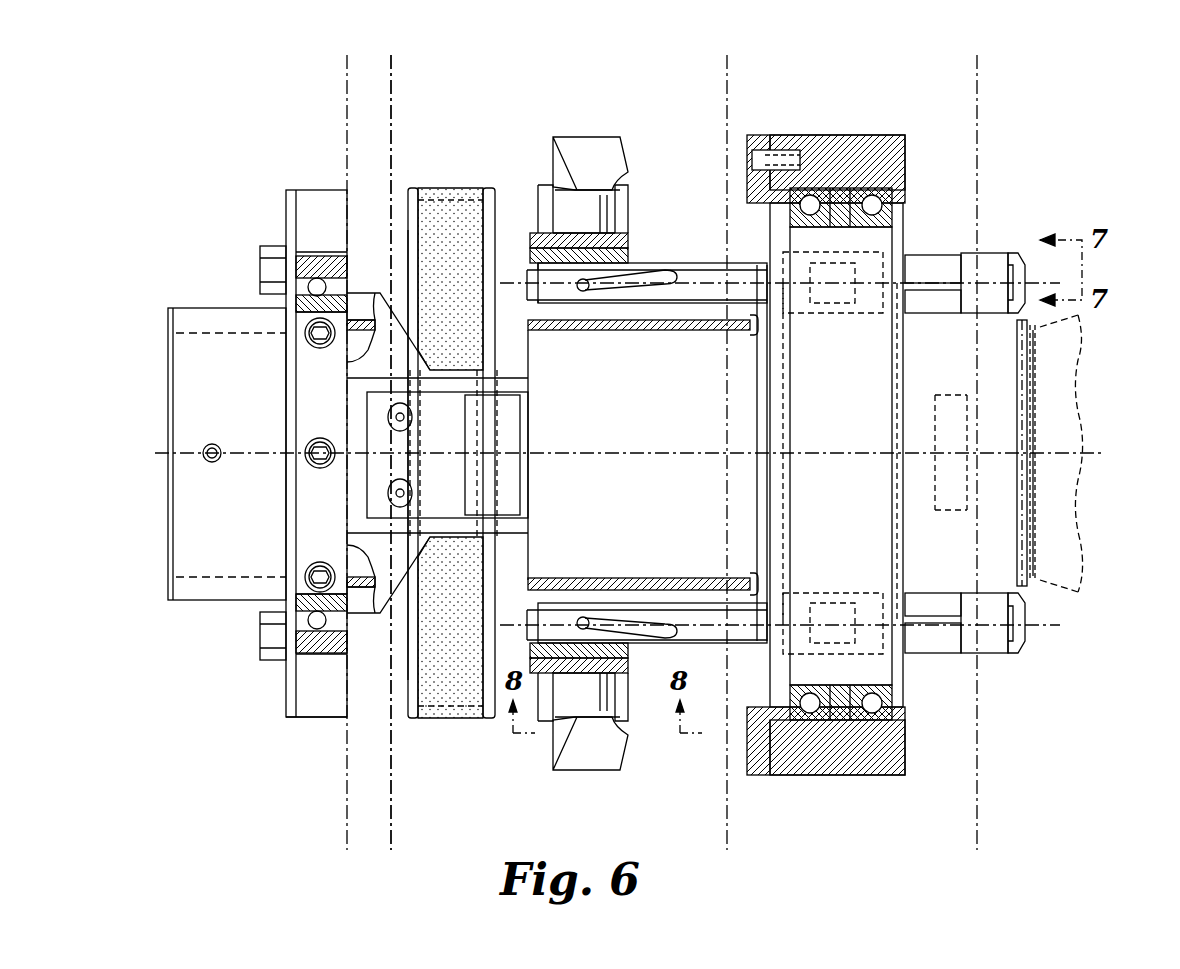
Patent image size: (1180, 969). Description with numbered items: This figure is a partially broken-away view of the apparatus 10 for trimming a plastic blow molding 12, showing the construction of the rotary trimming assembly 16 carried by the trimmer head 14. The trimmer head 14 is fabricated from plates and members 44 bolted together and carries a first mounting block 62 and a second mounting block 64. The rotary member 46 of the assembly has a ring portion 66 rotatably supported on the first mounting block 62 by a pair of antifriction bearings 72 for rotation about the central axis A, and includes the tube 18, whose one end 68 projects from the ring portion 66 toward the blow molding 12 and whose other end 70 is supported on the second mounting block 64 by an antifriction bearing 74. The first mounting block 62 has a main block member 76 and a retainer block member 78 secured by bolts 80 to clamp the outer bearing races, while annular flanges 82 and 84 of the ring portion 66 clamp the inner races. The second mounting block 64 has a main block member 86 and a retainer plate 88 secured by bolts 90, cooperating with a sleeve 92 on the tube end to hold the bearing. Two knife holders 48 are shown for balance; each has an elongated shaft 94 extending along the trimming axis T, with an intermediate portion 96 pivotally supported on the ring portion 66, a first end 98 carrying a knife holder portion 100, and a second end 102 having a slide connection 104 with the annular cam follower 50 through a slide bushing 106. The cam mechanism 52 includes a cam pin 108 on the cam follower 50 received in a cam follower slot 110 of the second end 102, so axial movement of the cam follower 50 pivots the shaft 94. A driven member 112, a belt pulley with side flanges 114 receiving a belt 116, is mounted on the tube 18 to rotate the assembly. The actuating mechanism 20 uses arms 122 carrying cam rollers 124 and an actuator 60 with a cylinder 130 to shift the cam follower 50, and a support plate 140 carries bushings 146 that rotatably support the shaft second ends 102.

The apparatus 10 is at (1058, 773).
The plastic blow molding 12 is at (1080, 320).
The trimmer head 14 is at (345, 800).
The rotary trimming assembly 16 is at (1085, 130).
The tube 18 is at (637, 578).
The actuating mechanism 20 is at (557, 775).
The plates and members 44 is at (395, 800).
The rotary member 46 is at (755, 338).
The knife holder 48 is at (1035, 358).
The annular cam follower 50 is at (537, 207).
The cam mechanism 52 is at (640, 300).
The actuator 60 is at (440, 392).
The first mounting block 62 is at (878, 778).
The second mounting block 64 is at (320, 728).
The ring portion 66 is at (905, 372).
The one end of tube 68 is at (1027, 595).
The another end of tube 70 is at (320, 338).
The pair of antifriction bearings 72 is at (835, 185).
The antifriction bearing 74 is at (322, 262).
The main block member 76 is at (810, 145).
The retainer block member 78 is at (760, 138).
The bolts 80 is at (752, 160).
The annular flange 82 is at (905, 200).
The annular flange 84 is at (790, 240).
The main block member 86 is at (318, 685).
The retainer plate 88 is at (286, 682).
The bolts 90 is at (260, 262).
The sleeve 92 is at (178, 308).
The elongated shaft 94 is at (920, 255).
The intermediate portion 96 is at (822, 240).
The first end 98 is at (985, 253).
The knife holder portion 100 is at (1020, 258).
The second end 102 is at (712, 265).
The slide connection 104 is at (572, 337).
The slide bushing 106 is at (535, 258).
The cam pin 108 is at (583, 295).
The cam follower slot 110 is at (670, 285).
The driven member 112 is at (405, 186).
The side flanges 114 is at (408, 260).
The belt 116 is at (452, 200).
The pair of arms 122 is at (580, 150).
The cam rollers 124 is at (575, 185).
The cylinder 130 is at (445, 400).
The support plate 140 is at (540, 258).
The bushings 146 is at (535, 258).
The trimming axis T is at (890, 240).
The central axis A is at (855, 460).